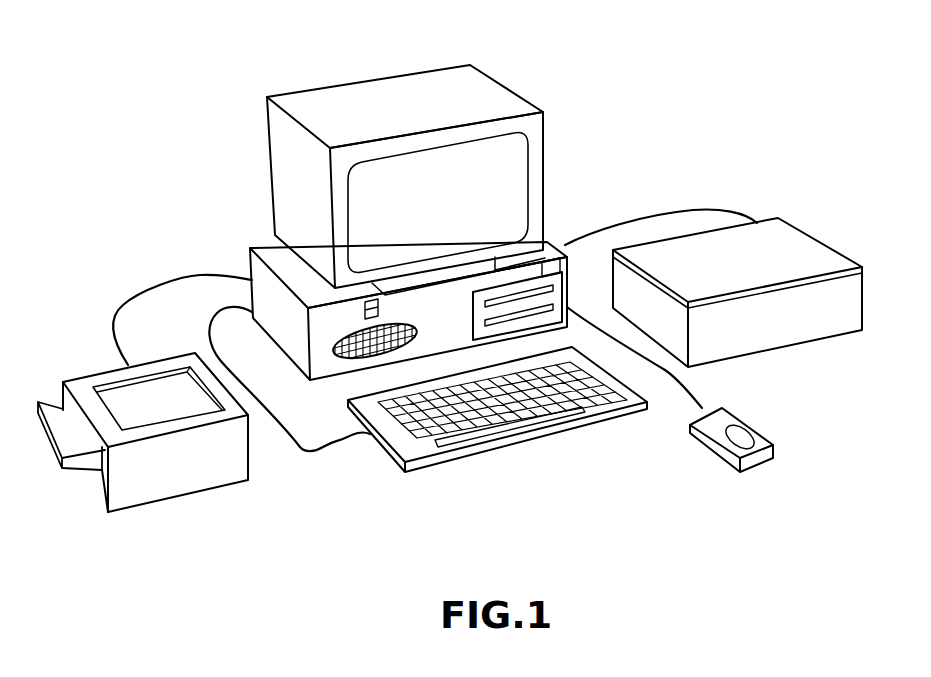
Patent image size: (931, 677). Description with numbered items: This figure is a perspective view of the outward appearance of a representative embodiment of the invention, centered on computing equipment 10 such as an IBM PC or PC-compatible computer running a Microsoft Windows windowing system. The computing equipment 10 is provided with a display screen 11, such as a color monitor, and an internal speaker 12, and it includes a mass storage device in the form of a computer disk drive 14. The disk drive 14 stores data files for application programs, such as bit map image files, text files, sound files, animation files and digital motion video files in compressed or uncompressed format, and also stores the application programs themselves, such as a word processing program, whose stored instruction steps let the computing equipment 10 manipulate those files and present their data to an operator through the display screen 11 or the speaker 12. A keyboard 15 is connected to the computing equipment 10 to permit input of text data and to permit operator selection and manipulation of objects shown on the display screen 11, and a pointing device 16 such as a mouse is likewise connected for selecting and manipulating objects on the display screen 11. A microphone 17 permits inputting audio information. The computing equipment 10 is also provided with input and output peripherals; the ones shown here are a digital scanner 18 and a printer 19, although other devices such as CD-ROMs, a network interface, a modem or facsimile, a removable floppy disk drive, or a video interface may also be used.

The computing equipment 10 is at (598, 97).
The display screen 11 is at (322, 87).
The internal speaker 12 is at (347, 362).
The computer disk drive 14 is at (503, 335).
The keyboard 15 is at (450, 463).
The pointing device 16 is at (755, 465).
The microphone 17 is at (365, 308).
The digital scanner 18 is at (823, 246).
The printer 19 is at (93, 377).